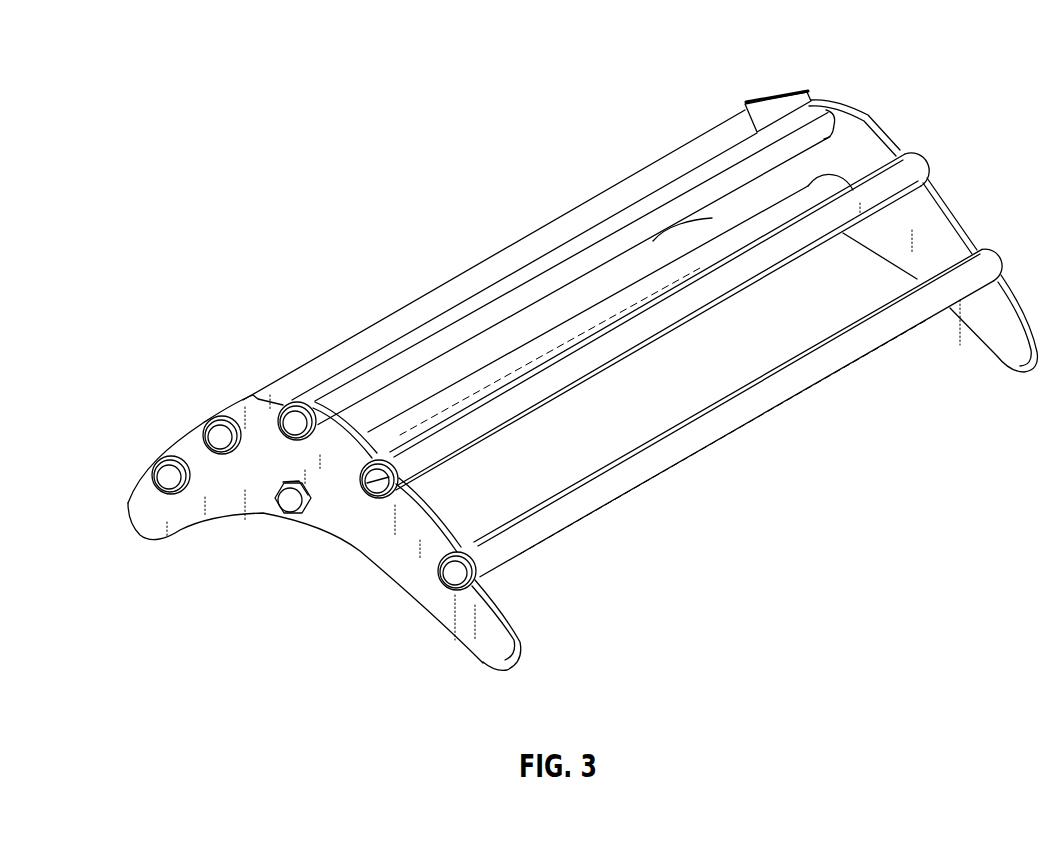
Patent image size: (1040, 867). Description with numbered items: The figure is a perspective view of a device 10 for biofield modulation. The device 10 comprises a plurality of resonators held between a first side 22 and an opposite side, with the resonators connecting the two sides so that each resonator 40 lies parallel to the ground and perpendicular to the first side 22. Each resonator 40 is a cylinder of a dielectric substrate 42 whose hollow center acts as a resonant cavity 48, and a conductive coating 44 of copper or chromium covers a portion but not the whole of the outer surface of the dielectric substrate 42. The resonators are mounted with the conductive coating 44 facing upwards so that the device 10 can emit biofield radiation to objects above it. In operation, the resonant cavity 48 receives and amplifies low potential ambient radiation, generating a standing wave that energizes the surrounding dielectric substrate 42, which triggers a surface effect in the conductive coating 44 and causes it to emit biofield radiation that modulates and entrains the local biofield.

The device for biofield modulation 10 is at (194, 194).
The first side 22 is at (153, 516).
The resonator 40 is at (750, 437).
The dielectric substrate 42 is at (817, 103).
The conductive coating 44 is at (860, 342).
The resonant cavity 48 is at (372, 483).